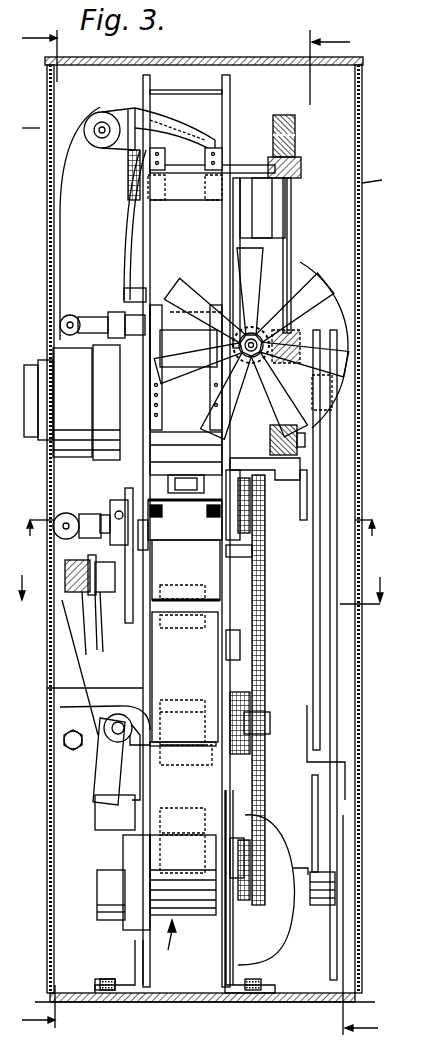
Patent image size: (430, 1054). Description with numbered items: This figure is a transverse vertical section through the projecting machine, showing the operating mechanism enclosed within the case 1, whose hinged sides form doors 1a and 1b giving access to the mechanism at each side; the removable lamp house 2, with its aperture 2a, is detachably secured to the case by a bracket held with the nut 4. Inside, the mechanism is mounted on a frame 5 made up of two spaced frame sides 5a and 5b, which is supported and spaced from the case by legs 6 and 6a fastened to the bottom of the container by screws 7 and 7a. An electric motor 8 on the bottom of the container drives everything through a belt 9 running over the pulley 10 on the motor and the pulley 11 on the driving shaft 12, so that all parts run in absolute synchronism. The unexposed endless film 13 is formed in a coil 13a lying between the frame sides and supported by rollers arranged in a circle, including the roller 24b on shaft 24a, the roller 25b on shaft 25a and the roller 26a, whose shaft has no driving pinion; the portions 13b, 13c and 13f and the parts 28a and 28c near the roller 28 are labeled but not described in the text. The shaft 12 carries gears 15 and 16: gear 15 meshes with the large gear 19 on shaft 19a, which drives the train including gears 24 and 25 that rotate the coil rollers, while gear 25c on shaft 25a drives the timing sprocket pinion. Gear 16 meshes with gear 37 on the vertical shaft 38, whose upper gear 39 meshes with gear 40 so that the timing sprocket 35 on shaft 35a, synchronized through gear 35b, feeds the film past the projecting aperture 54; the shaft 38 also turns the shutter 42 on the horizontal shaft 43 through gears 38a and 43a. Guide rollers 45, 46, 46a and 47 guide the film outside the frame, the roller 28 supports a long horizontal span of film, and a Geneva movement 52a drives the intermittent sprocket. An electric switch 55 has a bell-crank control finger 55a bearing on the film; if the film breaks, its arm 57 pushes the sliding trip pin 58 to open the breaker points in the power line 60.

The case 1 is at (345, 108).
The door 1a is at (30, 120).
The door 1b is at (382, 181).
The removable lamp house 2 is at (352, 535).
The aperture for the removable lamp house 2a is at (132, 300).
The nut 4 is at (424, 689).
The frame 5 is at (206, 588).
The frame side 5a is at (230, 104).
The frame side 5b is at (150, 80).
The leg 6 is at (305, 952).
The leg 6a is at (137, 972).
The screw 7 is at (290, 978).
The screw 7a is at (100, 978).
The electric motor 8 is at (278, 850).
The belt 9 is at (323, 728).
The pulley 10 is at (335, 888).
The pulley 11 is at (337, 465).
The driving shaft 12 is at (305, 447).
The endless film 13 is at (245, 935).
The coil 13a is at (148, 720).
The housing portion 13b is at (58, 168).
The tube 13c is at (195, 137).
The housing portion 13f is at (150, 680).
The gear 15 is at (320, 395).
The gear 16 is at (300, 440).
The large gear 19 is at (265, 608).
The shaft 19a is at (240, 557).
The gear 24 is at (250, 850).
The shaft 24a is at (240, 838).
The roller 24b is at (205, 815).
The gear 25 is at (250, 700).
The shaft 25a is at (265, 735).
The roller 25b is at (205, 700).
The gear 25c is at (240, 690).
The roller 26a is at (186, 586).
The roller 28 is at (162, 520).
The bracket arm 28a is at (240, 520).
The gear 28c is at (250, 495).
The timing sprocket 35 is at (200, 163).
The shaft 35a is at (248, 170).
The gear 35b is at (128, 180).
The gear 37 is at (297, 430).
The vertical shaft 38 is at (291, 238).
The gear 38a is at (300, 330).
The gear 39 is at (301, 172).
The gear 40 is at (295, 135).
The shutter 42 is at (330, 312).
The horizontal shaft 43 is at (262, 336).
The gear 43a is at (222, 312).
The guide roller 45 is at (95, 718).
The guide roller 46 is at (80, 512).
The guide roller 46a is at (70, 315).
The guide roller 47 is at (110, 112).
The Geneva movement 52a is at (38, 370).
The projecting aperture 54 is at (182, 347).
The electric switch 55 is at (88, 568).
The control finger 55a is at (185, 478).
The arm 57 is at (110, 512).
The sliding trip pin 58 is at (148, 540).
The power line 60 is at (100, 650).